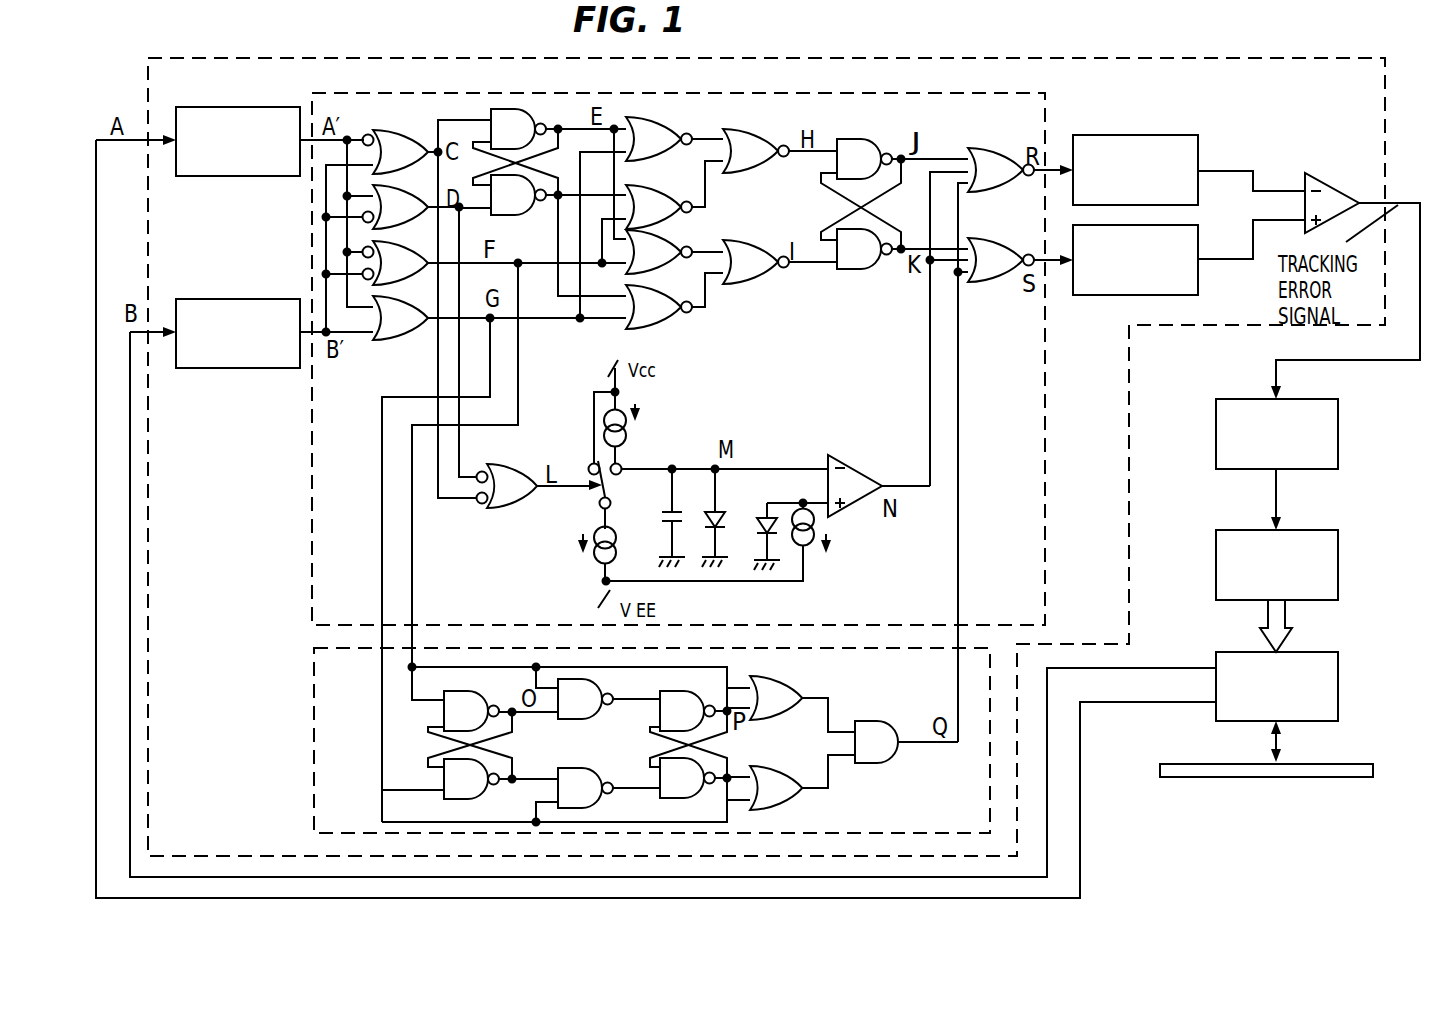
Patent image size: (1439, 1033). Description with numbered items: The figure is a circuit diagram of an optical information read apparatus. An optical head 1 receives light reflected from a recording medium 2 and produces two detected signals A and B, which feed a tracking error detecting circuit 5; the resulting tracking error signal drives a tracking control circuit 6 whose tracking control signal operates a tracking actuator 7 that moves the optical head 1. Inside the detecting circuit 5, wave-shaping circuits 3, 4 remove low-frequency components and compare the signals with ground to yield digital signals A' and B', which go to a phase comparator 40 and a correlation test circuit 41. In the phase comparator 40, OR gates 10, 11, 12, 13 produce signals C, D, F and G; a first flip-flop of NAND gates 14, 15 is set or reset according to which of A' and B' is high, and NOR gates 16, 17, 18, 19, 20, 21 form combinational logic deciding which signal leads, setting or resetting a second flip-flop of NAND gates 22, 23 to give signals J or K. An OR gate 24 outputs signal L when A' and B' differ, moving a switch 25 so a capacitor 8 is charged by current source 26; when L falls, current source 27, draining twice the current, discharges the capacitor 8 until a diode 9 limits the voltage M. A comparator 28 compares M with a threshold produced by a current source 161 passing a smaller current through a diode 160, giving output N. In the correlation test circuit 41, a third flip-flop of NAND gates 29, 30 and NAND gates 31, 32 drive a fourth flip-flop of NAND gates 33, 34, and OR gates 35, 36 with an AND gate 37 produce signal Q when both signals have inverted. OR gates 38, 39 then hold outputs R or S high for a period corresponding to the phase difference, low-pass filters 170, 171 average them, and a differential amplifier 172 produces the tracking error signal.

The optical head 1 is at (1338, 687).
The recording medium 2 is at (1352, 778).
The wave-shaping circuit 3 is at (256, 176).
The wave-shaping circuit 4 is at (258, 299).
The tracking error detecting circuit 5 is at (890, 58).
The tracking control circuit 6 is at (1338, 447).
The tracking actuator 7 is at (1338, 582).
The capacitor 8 is at (660, 514).
The diode 9 is at (708, 512).
The OR gate 10 is at (396, 132).
The OR gate 11 is at (400, 197).
The OR gate 12 is at (398, 253).
The OR gate 13 is at (398, 310).
The NAND gate 14 is at (543, 124).
The NAND gate 15 is at (530, 217).
The NOR gate 16 is at (671, 132).
The NOR gate 17 is at (658, 189).
The NOR gate 18 is at (674, 246).
The NOR gate 19 is at (660, 297).
The NOR gate 20 is at (756, 142).
The NOR gate 21 is at (751, 256).
The NAND gate 22 is at (875, 148).
The NAND gate 23 is at (870, 270).
The OR gate 24 is at (524, 507).
The switch 25 is at (596, 496).
The current source 26 is at (632, 440).
The current source 27 is at (598, 566).
The comparator 28 is at (860, 474).
The NAND gate 29 is at (480, 693).
The NAND gate 30 is at (488, 798).
The NAND gate 31 is at (592, 720).
The NAND gate 32 is at (592, 768).
The NAND gate 33 is at (688, 693).
The NAND gate 34 is at (688, 798).
The OR gate 35 is at (786, 690).
The OR gate 36 is at (780, 781).
The AND gate 37 is at (893, 727).
The OR gate 38 is at (993, 156).
The OR gate 39 is at (998, 252).
The phase comparator 40 is at (312, 467).
The correlation test circuit 41 is at (314, 688).
The diode 160 is at (760, 516).
The current source 161 is at (808, 547).
The low-pass filter 170 is at (1130, 135).
The low-pass filter 171 is at (1180, 295).
The differential amplifier 172 is at (1353, 180).